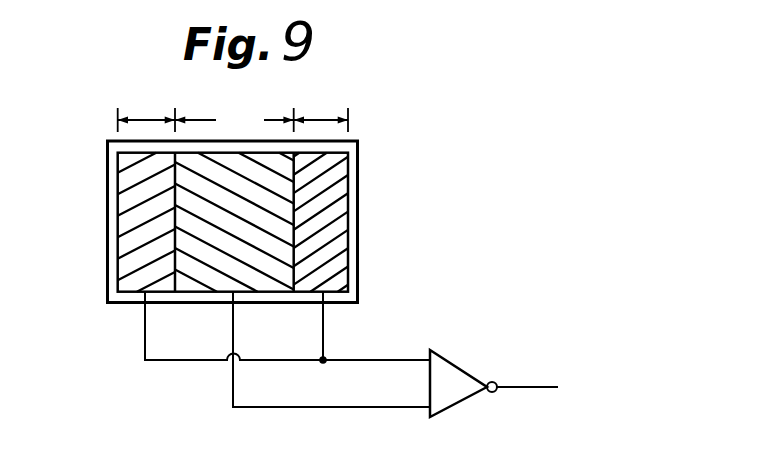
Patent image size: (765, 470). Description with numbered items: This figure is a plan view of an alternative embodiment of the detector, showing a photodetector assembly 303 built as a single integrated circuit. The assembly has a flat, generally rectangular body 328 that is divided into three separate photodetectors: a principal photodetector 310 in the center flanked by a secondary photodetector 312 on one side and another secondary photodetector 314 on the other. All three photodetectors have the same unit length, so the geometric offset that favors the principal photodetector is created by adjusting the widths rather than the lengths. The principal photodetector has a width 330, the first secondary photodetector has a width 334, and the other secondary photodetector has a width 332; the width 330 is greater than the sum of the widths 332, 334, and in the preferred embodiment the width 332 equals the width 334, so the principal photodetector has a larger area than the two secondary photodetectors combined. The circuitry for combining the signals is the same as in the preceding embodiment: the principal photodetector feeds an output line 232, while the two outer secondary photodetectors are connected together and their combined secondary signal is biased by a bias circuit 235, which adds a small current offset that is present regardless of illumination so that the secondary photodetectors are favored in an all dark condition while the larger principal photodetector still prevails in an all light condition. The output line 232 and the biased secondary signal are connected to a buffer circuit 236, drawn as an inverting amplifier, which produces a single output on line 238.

The photodetector assembly 303 is at (372, 207).
The principal photodetector 310 is at (264, 237).
The secondary photodetector 312 is at (130, 197).
The secondary photodetector 314 is at (345, 160).
The flat generally rectangular body 328 is at (108, 302).
The width of principal photodetector 330 is at (234, 119).
The width of secondary photodetector 332 is at (318, 118).
The width of secondary photodetector 334 is at (152, 102).
The output line 232 is at (233, 407).
The bias circuit 235 is at (326, 327).
The buffer circuit 236 is at (453, 360).
The output line 238 is at (508, 383).